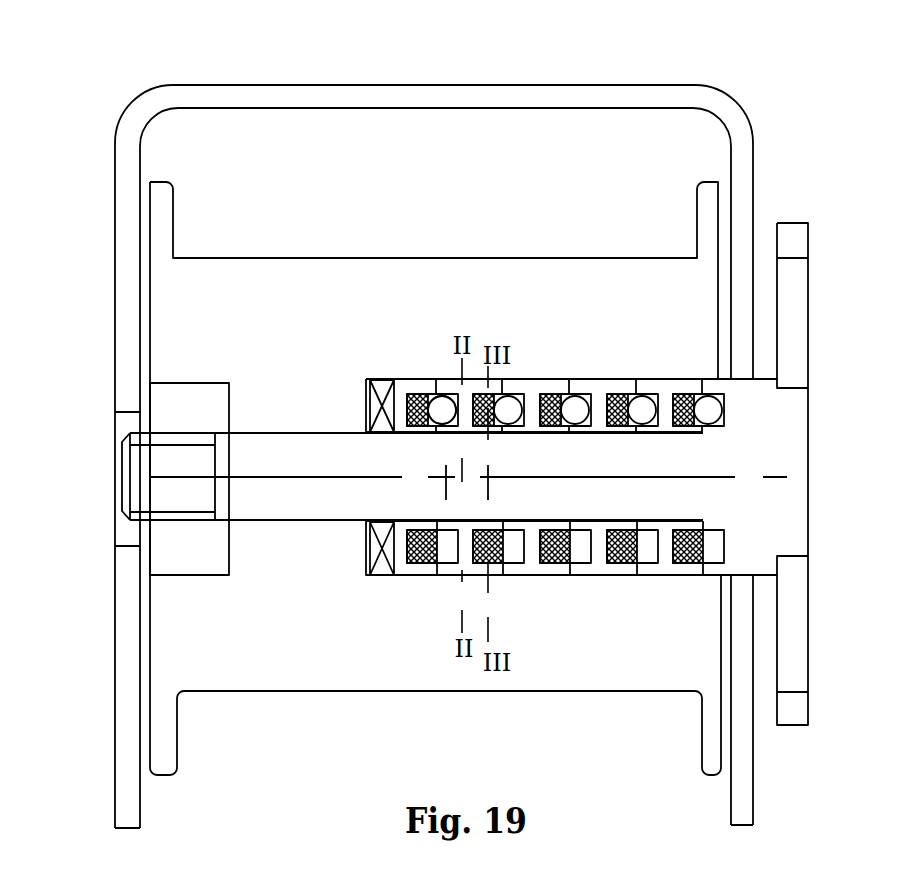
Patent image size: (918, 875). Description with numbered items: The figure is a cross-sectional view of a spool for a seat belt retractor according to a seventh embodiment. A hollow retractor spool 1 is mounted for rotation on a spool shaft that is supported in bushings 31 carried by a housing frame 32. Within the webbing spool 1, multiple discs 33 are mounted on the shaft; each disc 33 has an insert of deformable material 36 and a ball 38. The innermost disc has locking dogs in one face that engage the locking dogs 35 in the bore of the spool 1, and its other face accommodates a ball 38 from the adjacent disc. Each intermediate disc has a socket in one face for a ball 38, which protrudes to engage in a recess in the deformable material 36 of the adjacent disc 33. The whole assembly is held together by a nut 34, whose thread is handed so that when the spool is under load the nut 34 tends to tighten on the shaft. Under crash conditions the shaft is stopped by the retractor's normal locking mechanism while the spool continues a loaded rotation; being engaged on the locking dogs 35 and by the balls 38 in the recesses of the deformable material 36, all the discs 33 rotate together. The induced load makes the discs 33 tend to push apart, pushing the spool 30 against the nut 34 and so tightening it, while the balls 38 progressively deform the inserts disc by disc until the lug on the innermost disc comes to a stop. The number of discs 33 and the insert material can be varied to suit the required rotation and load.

The retractor spool 1 is at (256, 675).
The spool 30 is at (137, 467).
The bushings 31 is at (128, 528).
The housing frame 32 is at (113, 288).
The discs 33 is at (448, 707).
The nut 34 is at (190, 547).
The locking dogs 35 is at (373, 575).
The deformable material 36 is at (406, 392).
The ball 38 is at (442, 410).